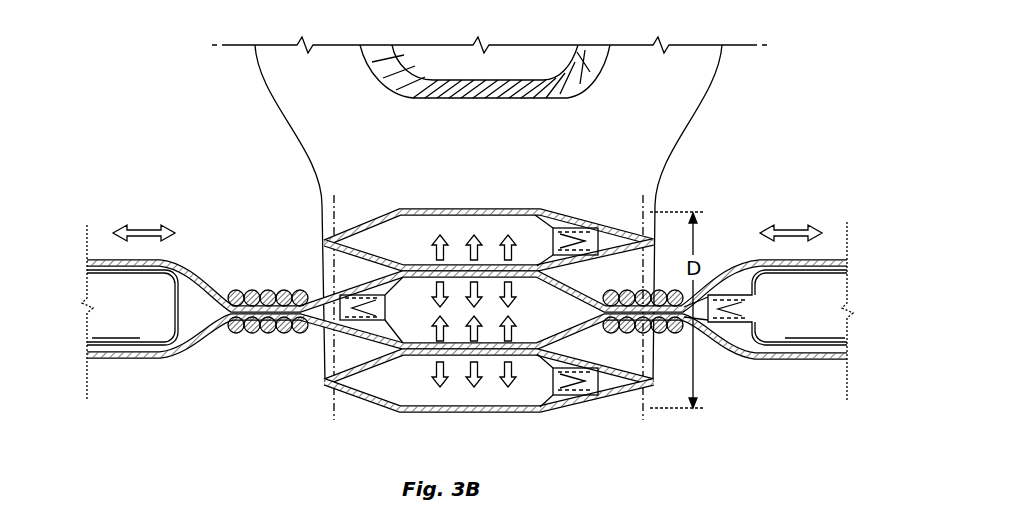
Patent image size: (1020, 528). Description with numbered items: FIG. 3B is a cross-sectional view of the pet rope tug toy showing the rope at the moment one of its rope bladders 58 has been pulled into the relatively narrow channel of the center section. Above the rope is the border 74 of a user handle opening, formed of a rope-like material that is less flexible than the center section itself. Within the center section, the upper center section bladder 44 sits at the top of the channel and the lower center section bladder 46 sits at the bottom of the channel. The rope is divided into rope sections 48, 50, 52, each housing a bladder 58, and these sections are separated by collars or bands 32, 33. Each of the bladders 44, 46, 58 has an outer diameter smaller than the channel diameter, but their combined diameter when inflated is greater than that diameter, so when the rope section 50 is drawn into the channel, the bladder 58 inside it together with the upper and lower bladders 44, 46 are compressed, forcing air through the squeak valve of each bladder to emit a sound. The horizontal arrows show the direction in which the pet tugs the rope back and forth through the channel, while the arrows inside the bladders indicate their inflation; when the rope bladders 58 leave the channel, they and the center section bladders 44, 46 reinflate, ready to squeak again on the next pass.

The border 74 is at (548, 98).
The upper center section bladder 44 is at (420, 232).
The lower center section bladder 46 is at (405, 398).
The rope section 50 is at (350, 328).
The rope section 48 is at (107, 360).
The rope section 52 is at (745, 360).
The collar or band 32 is at (256, 333).
The collar or band 33 is at (659, 290).
The bladder 58 is at (400, 300).